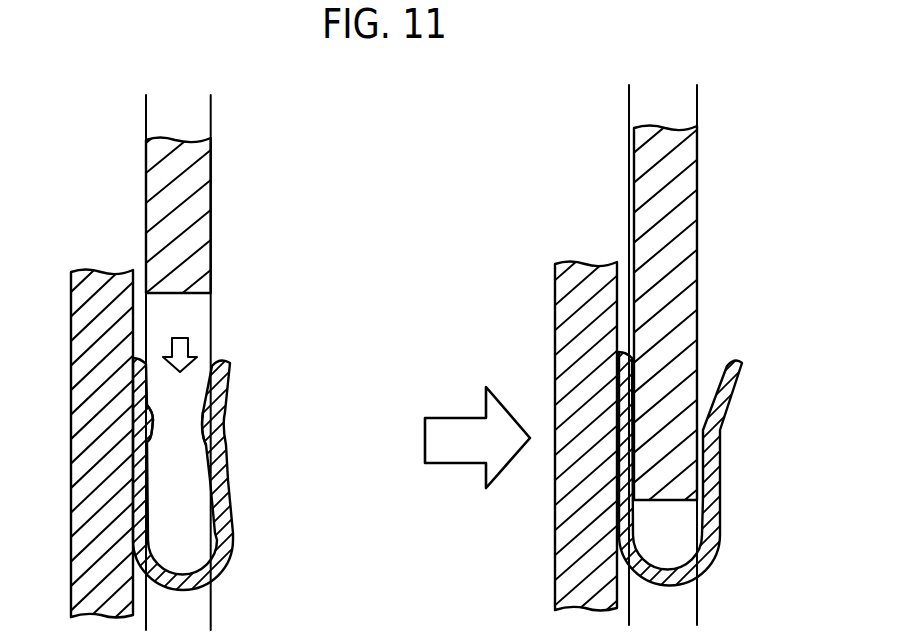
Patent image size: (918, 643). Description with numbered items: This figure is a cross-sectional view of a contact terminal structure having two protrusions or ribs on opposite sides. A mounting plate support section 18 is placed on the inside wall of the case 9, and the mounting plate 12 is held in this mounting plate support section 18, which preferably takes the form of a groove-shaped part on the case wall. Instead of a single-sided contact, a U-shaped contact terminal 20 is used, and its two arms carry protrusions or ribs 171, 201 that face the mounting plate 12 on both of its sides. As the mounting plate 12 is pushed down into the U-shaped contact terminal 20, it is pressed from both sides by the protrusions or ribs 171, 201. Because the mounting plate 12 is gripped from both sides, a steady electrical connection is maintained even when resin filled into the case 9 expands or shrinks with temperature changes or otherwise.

The mounting plate support section 18 is at (177, 100).
The mounting plate 12 is at (172, 192).
The case 9 is at (98, 422).
The U-shaped contact terminal 20 is at (215, 568).
The protrusion or rib 171 is at (138, 407).
The protrusion or rib 201 is at (204, 420).